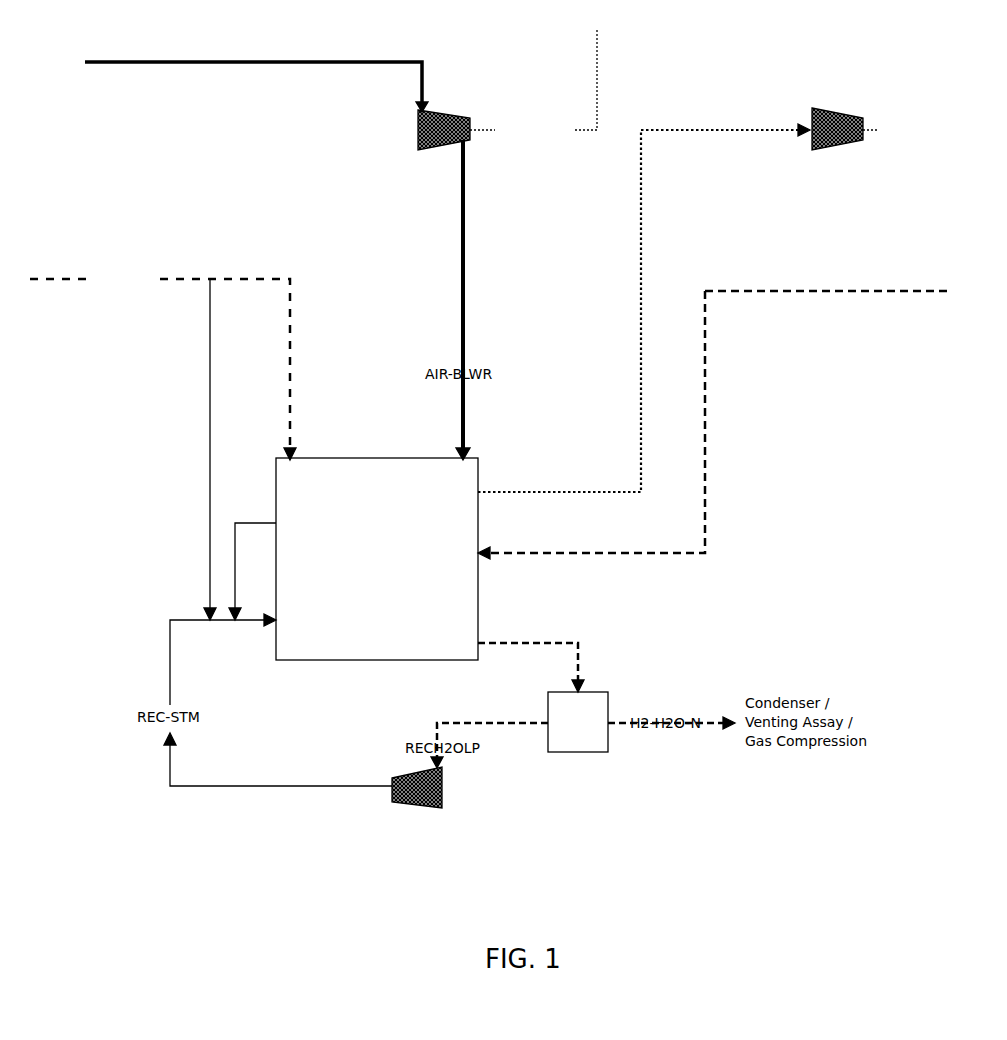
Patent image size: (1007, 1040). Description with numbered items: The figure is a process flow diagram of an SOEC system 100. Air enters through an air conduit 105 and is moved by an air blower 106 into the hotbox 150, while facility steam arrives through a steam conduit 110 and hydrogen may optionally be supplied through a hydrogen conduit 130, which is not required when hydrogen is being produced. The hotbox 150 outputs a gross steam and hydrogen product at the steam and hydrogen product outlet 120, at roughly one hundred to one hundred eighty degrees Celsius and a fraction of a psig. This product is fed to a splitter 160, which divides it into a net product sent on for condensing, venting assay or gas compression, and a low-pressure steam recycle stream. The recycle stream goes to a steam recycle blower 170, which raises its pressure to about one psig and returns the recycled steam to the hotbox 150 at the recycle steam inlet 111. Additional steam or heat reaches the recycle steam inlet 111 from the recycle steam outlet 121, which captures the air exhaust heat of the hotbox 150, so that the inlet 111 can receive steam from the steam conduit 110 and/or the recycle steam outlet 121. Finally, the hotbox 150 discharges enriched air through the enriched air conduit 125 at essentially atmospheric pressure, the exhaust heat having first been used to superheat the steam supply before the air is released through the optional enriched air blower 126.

The SOEC system 100 is at (550, 1013).
The air conduit 105 is at (256, 74).
The air blower 106 is at (492, 77).
The steam conduit 110 is at (163, 437).
The recycle steam inlet 111 is at (284, 658).
The steam and hydrogen product outlet 120 is at (481, 638).
The recycle steam outlet 121 is at (314, 567).
The enriched air conduit 125 is at (644, 301).
The enriched air blower 126 is at (845, 120).
The hydrogen conduit 130 is at (712, 414).
The hotbox 150 is at (377, 559).
The splitter 160 is at (578, 731).
The steam recycle blower 170 is at (320, 783).